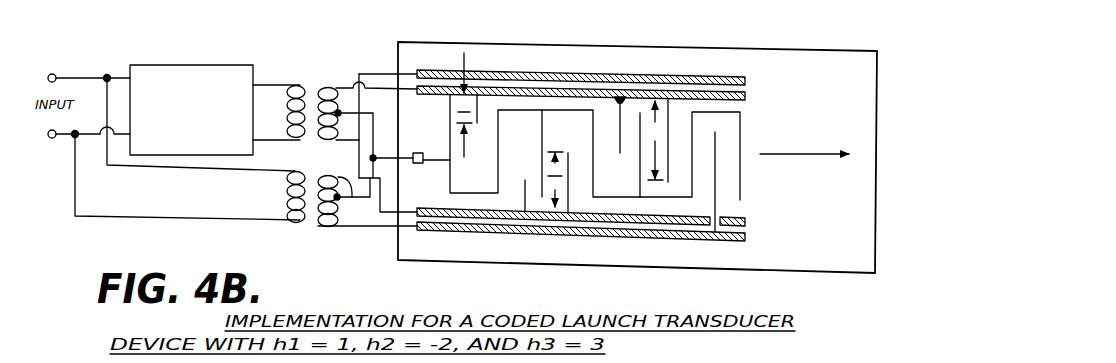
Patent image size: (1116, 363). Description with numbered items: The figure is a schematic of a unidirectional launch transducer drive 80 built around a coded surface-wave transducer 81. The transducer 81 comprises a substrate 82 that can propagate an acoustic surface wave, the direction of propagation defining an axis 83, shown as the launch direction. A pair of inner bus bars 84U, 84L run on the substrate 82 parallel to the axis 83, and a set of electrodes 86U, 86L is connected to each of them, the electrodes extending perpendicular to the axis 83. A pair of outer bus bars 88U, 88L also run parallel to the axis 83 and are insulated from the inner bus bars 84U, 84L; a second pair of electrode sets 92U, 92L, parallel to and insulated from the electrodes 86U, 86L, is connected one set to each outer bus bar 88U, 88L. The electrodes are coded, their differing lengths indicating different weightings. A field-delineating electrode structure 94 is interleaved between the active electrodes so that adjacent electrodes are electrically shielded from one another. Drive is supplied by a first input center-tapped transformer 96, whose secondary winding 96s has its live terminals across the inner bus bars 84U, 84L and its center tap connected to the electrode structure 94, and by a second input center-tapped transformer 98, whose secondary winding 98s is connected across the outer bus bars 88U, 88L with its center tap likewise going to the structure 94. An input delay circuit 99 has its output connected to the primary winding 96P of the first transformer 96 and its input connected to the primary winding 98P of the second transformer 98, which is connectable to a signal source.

The unidirectional launch transducer drive 80 is at (266, 23).
The input delay circuit 99 is at (177, 64).
The first input center-tapped transformer 96 is at (335, 94).
The primary winding of first input transformer 96P is at (279, 126).
The secondary winding of first input transformer 96s is at (332, 141).
The second input center-tapped transformer 98 is at (330, 215).
The primary winding of second input transformer 98P is at (304, 187).
The secondary winding of second input transformer 98s is at (367, 201).
The surface-wave transducer 81 is at (628, 30).
The substrate 82 is at (567, 252).
The axis 83 is at (764, 156).
The field-delineating electrode structure 94 is at (444, 150).
The outer bus bar 88U is at (450, 70).
The inner bus bar 84U is at (428, 94).
The inner bus bar 84L is at (436, 208).
The outer bus bar 88L is at (435, 232).
The electrode set 86U is at (477, 124).
The electrode set 86L is at (578, 140).
The electrode set 92U is at (618, 153).
The electrode set 92L is at (522, 184).